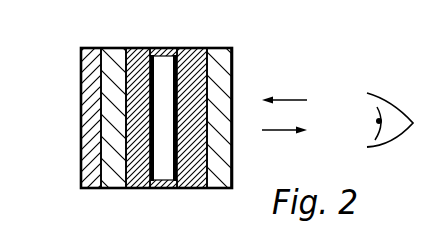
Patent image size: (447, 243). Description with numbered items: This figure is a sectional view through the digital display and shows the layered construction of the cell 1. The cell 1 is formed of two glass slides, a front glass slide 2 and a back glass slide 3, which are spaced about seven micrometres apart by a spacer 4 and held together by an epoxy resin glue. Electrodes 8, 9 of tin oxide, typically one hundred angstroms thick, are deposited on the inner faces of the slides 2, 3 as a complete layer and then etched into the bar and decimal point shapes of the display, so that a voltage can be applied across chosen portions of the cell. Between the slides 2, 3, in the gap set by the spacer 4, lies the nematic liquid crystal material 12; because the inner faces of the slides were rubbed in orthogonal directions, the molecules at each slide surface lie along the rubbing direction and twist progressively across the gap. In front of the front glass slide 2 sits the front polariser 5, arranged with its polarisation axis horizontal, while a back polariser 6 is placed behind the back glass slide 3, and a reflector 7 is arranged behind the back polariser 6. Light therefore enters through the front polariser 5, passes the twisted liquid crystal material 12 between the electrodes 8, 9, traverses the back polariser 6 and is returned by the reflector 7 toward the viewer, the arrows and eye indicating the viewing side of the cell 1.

The cell 1 is at (152, 121).
The front glass slide 2 is at (196, 57).
The back glass slide 3 is at (133, 60).
The spacer 4 is at (181, 184).
The front polariser 5 is at (222, 75).
The back polariser 6 is at (118, 88).
The reflector 7 is at (88, 115).
The electrode 8 is at (178, 56).
The electrode 9 is at (151, 52).
The nematic liquid crystal material 12 is at (158, 182).